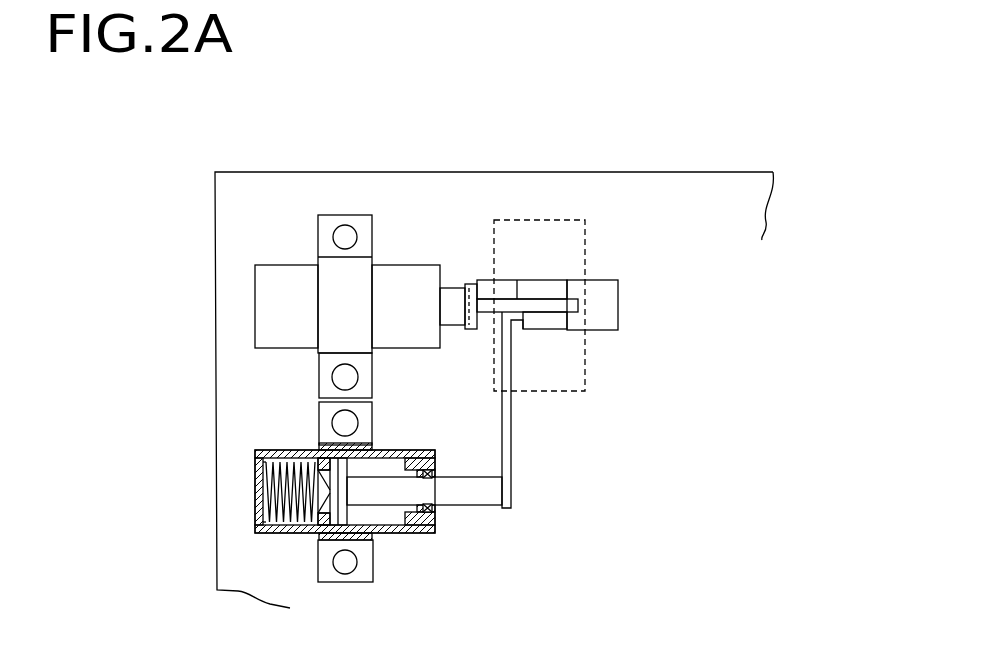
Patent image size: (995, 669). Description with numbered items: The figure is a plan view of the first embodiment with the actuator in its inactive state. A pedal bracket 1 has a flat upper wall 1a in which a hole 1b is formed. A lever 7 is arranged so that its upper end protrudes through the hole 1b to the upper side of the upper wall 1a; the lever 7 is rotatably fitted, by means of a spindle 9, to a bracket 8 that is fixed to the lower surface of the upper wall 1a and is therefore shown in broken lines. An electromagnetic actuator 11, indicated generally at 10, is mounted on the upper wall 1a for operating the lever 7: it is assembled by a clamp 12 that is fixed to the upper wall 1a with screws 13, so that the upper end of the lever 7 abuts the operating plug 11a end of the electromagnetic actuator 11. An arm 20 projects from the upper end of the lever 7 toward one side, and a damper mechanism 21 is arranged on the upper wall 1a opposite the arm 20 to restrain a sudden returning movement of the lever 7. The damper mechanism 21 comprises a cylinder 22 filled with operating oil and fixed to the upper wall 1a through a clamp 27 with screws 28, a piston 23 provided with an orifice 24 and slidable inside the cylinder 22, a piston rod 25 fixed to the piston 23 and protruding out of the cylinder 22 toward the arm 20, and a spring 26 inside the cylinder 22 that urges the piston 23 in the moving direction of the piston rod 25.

The pedal bracket 1 is at (643, 168).
The upper wall 1a is at (438, 187).
The hole 1b is at (618, 295).
The lever 7 is at (577, 307).
The bracket 8 is at (587, 240).
The spindle 9 is at (562, 322).
The head unit 10 is at (455, 280).
The electromagnetic actuator 11 is at (300, 272).
The operating plug 11a is at (522, 268).
The clamp 12 is at (353, 282).
The screws 13 is at (345, 232).
The arm 20 is at (512, 452).
The damper mechanism 21 is at (303, 545).
The cylinder 22 is at (425, 533).
The piston 23 is at (348, 512).
The orifice 24 is at (348, 472).
The piston rod 25 is at (463, 498).
The spring 26 is at (283, 455).
The clamp 27 is at (347, 578).
The screws 28 is at (352, 560).